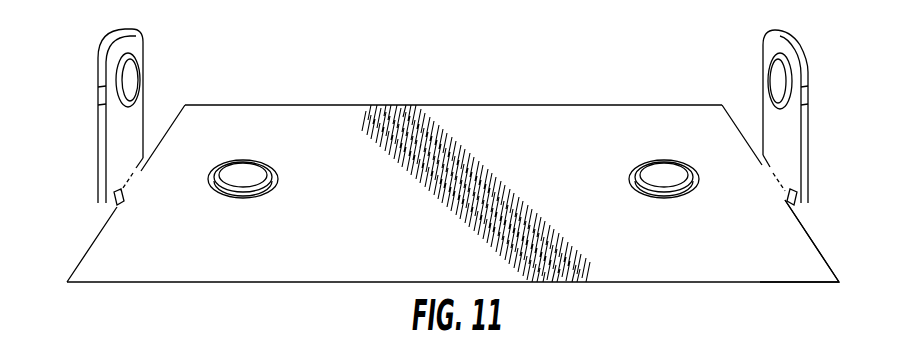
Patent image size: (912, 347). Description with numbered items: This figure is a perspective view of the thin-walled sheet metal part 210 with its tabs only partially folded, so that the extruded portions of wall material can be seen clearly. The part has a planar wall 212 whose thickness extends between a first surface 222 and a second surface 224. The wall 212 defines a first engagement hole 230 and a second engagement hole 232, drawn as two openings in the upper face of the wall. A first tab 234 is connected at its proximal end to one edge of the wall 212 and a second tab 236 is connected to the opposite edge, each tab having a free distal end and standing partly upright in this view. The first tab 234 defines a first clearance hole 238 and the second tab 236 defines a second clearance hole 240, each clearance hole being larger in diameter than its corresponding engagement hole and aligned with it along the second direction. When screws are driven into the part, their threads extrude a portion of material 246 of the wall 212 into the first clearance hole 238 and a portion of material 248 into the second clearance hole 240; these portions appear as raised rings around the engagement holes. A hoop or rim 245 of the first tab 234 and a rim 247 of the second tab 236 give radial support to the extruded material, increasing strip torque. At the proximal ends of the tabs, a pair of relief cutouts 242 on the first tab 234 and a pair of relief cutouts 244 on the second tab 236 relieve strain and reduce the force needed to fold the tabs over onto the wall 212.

The thin-walled sheet metal part 210 is at (453, 185).
The wall 212 is at (530, 122).
The first surface 222 is at (727, 270).
The second surface 224 is at (756, 290).
The first engagement hole 230 is at (248, 159).
The portion of material 246 is at (257, 158).
The second engagement hole 232 is at (642, 157).
The portion of material 248 is at (663, 158).
The first tab 234 is at (125, 140).
The second tab 236 is at (773, 136).
The first clearance hole 238 is at (176, 61).
The second clearance hole 240 is at (723, 68).
The rim 245 is at (134, 75).
The rim 247 is at (776, 77).
The relief cutouts 242 is at (105, 211).
The relief cutouts 244 is at (807, 211).